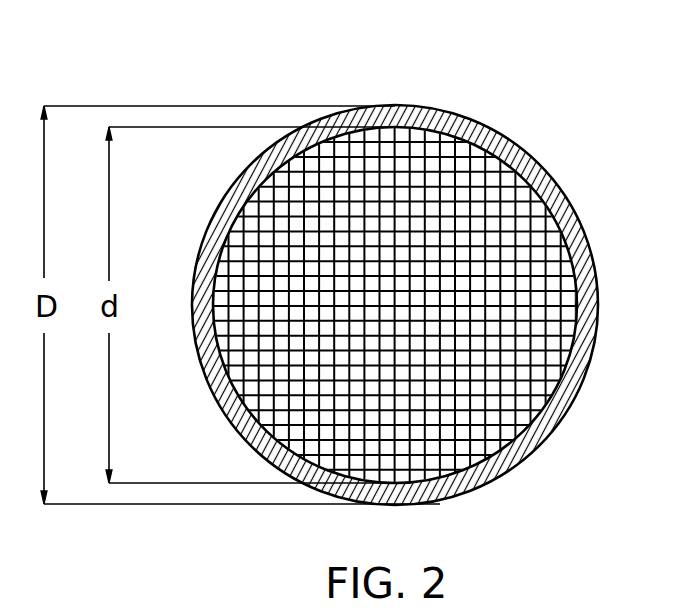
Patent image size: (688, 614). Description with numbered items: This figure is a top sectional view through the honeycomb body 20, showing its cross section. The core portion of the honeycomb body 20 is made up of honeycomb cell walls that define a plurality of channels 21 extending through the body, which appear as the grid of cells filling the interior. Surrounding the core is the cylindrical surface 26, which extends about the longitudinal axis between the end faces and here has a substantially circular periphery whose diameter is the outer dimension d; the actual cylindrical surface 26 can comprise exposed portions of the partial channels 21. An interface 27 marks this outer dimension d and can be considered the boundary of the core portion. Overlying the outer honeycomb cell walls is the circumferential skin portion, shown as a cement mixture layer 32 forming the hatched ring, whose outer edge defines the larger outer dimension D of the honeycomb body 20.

The honeycomb body 20 is at (429, 279).
The channels 21 is at (477, 430).
The cylindrical surface 26 is at (528, 173).
The interface 27 is at (578, 314).
The cement mixture layer 32 is at (558, 403).